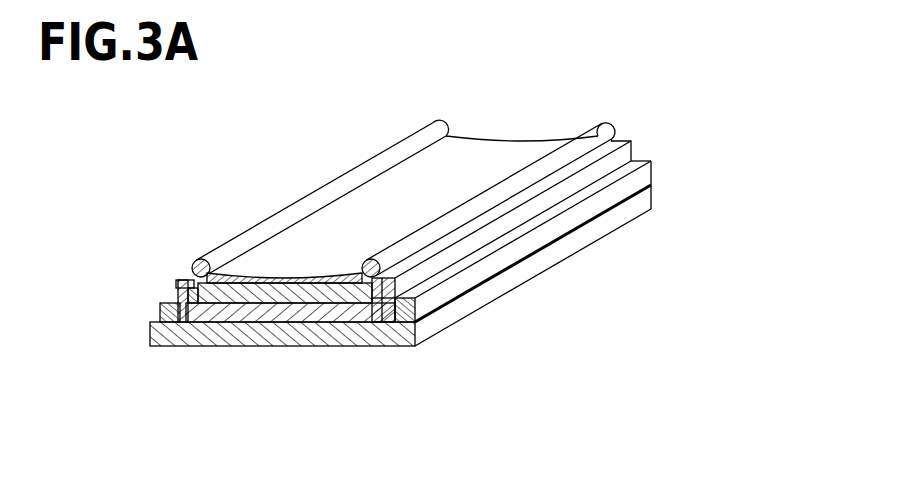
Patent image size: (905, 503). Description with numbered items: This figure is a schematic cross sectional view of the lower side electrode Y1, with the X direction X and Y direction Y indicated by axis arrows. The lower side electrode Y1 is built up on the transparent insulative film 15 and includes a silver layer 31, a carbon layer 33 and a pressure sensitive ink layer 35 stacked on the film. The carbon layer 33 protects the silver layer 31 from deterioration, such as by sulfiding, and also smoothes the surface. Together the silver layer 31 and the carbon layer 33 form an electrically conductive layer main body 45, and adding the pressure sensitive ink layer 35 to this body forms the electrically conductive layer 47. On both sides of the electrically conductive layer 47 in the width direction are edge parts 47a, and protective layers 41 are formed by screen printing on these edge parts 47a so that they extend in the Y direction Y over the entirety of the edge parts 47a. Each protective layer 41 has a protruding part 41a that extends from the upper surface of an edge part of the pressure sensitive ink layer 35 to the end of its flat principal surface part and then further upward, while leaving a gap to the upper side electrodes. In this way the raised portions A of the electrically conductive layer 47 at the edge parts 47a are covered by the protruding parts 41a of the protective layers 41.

The transparent insulative film 15 is at (237, 338).
The silver layer 31 is at (284, 313).
The carbon layer 33 is at (323, 312).
The pressure sensitive ink layer 35 is at (357, 276).
The electrically conductive layer main body 45 is at (290, 360).
The electrically conductive layer 47 is at (392, 304).
The edge parts 47a is at (176, 306).
The protective layers 41 is at (179, 284).
The protruding parts 41a is at (207, 259).
The raised portions A is at (190, 258).
The lower side electrode Y1 is at (495, 104).
The X direction X is at (447, 390).
The Y direction Y is at (447, 390).